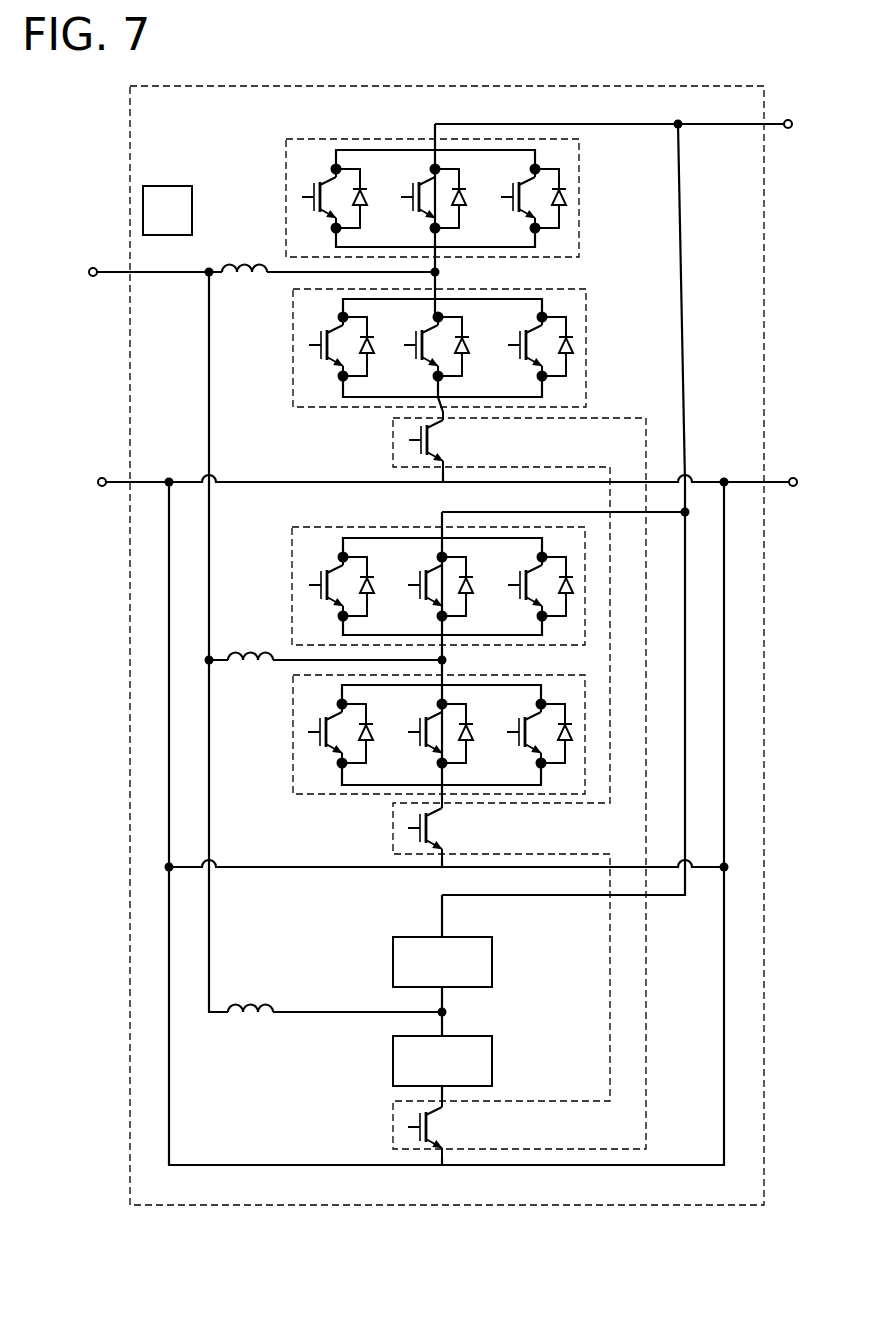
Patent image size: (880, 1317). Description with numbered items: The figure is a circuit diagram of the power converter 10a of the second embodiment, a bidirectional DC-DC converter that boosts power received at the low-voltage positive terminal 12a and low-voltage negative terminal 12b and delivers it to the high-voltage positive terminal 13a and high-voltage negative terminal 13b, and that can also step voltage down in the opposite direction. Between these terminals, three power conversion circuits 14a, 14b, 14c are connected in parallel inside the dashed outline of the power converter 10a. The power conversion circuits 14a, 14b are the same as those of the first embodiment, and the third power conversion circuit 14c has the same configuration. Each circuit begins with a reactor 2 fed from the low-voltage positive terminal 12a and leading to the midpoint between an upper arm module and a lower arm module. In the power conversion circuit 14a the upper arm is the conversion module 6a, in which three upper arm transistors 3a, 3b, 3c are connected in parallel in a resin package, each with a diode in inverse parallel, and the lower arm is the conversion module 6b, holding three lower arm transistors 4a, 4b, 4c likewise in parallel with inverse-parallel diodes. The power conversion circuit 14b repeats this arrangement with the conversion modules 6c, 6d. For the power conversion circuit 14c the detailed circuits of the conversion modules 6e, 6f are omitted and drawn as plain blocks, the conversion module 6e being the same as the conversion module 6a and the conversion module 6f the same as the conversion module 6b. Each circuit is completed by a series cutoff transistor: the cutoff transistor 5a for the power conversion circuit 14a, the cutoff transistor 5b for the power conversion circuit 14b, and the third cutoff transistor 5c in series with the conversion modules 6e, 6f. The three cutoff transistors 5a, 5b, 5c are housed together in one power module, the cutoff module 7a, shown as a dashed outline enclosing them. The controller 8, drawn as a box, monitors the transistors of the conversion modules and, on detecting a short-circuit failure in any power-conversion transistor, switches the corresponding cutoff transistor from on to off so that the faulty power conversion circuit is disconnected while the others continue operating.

The power converter 10a is at (196, 85).
The controller 8 is at (168, 186).
The reactor 2 is at (237, 278).
The upper arm transistor 3a is at (336, 405).
The upper arm transistor 3b is at (435, 405).
The upper arm transistor 3c is at (535, 405).
The lower arm transistor 4a is at (339, 552).
The lower arm transistor 4b is at (436, 552).
The lower arm transistor 4c is at (538, 552).
The cutoff transistor 5a is at (409, 440).
The cutoff transistor 5b is at (408, 828).
The third cutoff transistor 5c is at (408, 1127).
The conversion module 6a is at (580, 170).
The conversion module 6b is at (587, 318).
The conversion module 6c is at (292, 598).
The conversion module 6d is at (293, 744).
The conversion module 6e is at (393, 968).
The conversion module 6f is at (393, 1066).
The cutoff module 7a is at (646, 418).
The low-voltage positive terminal 12a is at (93, 268).
The low-voltage negative terminal 12b is at (102, 478).
The high-voltage positive terminal 13a is at (789, 120).
The high-voltage negative terminal 13b is at (793, 478).
The power conversion circuit 14a is at (252, 167).
The power conversion circuit 14b is at (274, 557).
The third power conversion circuit 14c is at (304, 952).